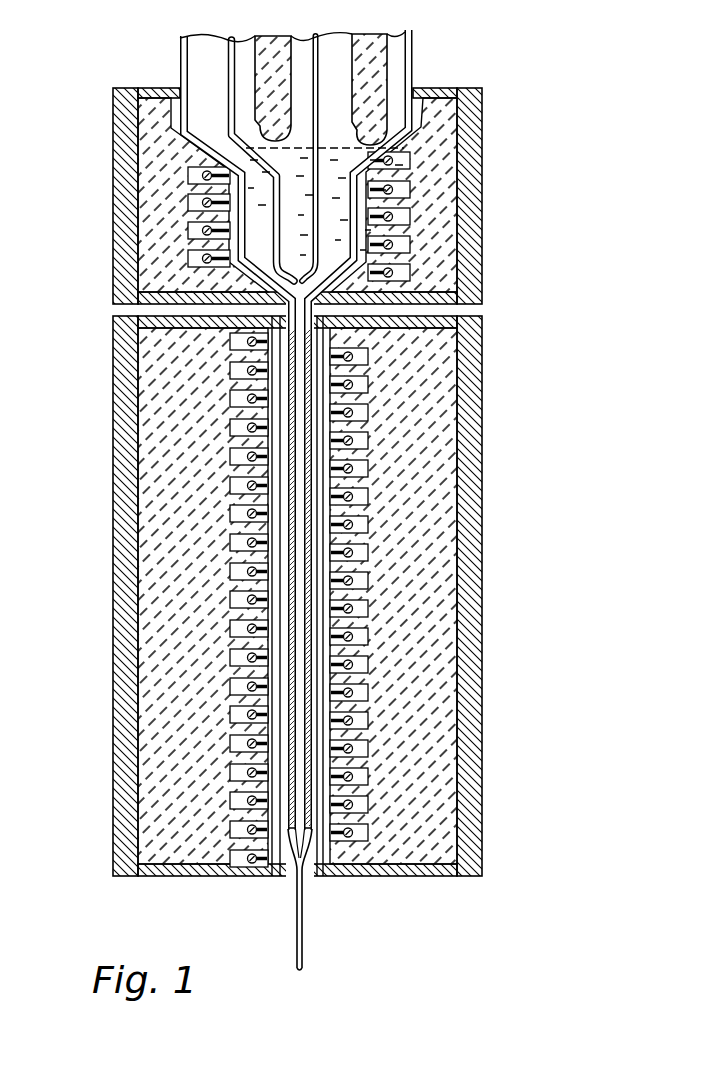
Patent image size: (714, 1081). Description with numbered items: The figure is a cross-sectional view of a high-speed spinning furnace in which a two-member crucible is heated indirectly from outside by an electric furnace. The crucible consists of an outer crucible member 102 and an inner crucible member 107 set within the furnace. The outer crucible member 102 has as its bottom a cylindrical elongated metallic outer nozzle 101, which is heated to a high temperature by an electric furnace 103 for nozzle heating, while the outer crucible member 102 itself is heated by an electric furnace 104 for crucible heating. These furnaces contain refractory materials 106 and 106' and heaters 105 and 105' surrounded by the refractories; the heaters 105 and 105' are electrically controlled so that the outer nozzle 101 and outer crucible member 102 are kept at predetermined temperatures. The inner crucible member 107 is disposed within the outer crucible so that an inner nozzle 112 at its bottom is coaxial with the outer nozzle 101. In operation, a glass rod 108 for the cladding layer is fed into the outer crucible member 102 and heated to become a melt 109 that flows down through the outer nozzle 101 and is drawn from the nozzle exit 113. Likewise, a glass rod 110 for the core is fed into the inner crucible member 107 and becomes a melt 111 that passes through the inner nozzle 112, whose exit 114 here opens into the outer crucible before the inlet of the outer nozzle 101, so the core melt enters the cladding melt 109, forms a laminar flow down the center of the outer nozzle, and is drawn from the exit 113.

The outer nozzle 101 is at (306, 626).
The outer crucible member 102 is at (360, 233).
The electric furnace for nozzle heating 103 is at (487, 442).
The electric furnace for crucible heating 104 is at (487, 280).
The heater 105 is at (440, 594).
The heater 105' is at (465, 216).
The refractory material 106 is at (349, 596).
The refractory material 106' is at (347, 195).
The inner crucible member 107 is at (270, 210).
The glass rod for cladding layer 108 is at (387, 53).
The melt 109 is at (342, 187).
The glass rod for core 110 is at (257, 60).
The melt 111 is at (208, 174).
The inner nozzle 112 is at (286, 277).
The nozzle exit 113 is at (292, 832).
The exit of inner nozzle 114 is at (264, 316).